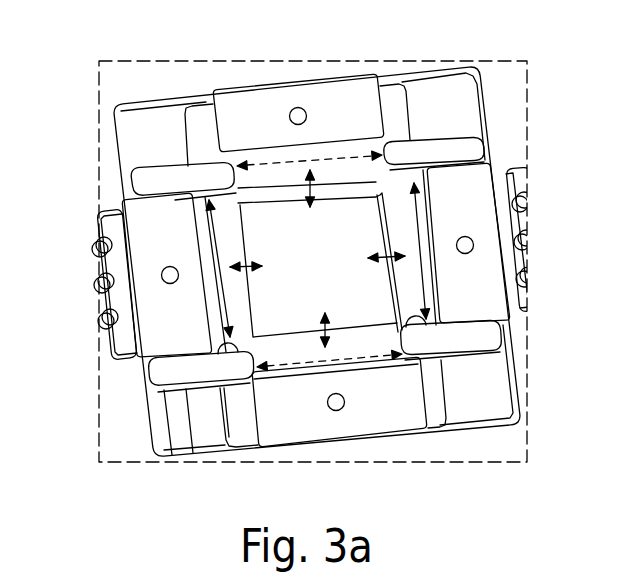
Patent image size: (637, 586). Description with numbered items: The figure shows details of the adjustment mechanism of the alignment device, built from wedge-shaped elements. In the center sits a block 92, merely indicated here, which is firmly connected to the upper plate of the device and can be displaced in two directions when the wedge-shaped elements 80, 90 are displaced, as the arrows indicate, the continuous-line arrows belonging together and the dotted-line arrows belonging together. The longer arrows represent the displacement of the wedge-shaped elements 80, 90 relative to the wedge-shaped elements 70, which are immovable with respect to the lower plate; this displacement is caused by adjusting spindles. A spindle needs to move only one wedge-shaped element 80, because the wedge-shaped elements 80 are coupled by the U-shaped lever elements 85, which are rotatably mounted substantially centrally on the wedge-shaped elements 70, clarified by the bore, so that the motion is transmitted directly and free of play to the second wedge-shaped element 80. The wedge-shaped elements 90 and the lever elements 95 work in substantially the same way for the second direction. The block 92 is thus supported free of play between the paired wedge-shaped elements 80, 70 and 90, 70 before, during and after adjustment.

The wedge-shaped element 70 is at (288, 82).
The wedge-shaped element 80 is at (422, 268).
The lever element 85 is at (393, 120).
The wedge-shaped element 90 is at (268, 183).
The block 92 is at (358, 226).
The lever element 95 is at (490, 343).